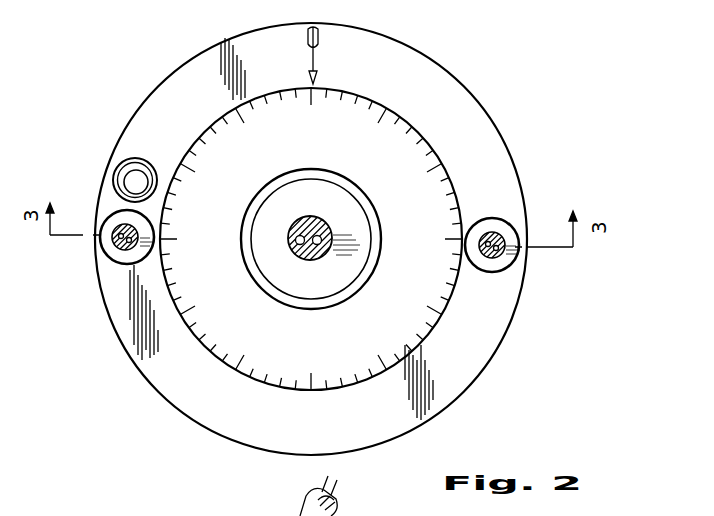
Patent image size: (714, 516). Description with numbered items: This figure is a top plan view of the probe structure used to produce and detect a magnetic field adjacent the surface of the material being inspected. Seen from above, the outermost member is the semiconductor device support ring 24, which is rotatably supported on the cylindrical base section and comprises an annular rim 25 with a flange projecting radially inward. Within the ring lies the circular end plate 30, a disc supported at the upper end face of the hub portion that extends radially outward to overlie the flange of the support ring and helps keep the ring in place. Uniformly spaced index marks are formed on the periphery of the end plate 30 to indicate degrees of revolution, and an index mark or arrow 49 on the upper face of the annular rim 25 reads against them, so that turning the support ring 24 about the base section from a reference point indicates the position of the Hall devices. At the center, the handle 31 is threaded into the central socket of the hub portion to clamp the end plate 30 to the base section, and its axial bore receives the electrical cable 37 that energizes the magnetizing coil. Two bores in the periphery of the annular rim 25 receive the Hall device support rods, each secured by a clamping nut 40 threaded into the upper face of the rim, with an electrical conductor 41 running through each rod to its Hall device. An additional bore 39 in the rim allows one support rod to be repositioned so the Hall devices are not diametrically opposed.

The semiconductor device support ring 24 is at (468, 366).
The annular rim 25 is at (176, 390).
The end plate 30 is at (399, 116).
The handle 31 is at (245, 263).
The electrical cable 37 is at (312, 216).
The additional bore 39 is at (121, 172).
The clamping nut 40 is at (112, 259).
The electrical conductor 41 is at (114, 240).
The index mark or arrow 49 is at (320, 42).